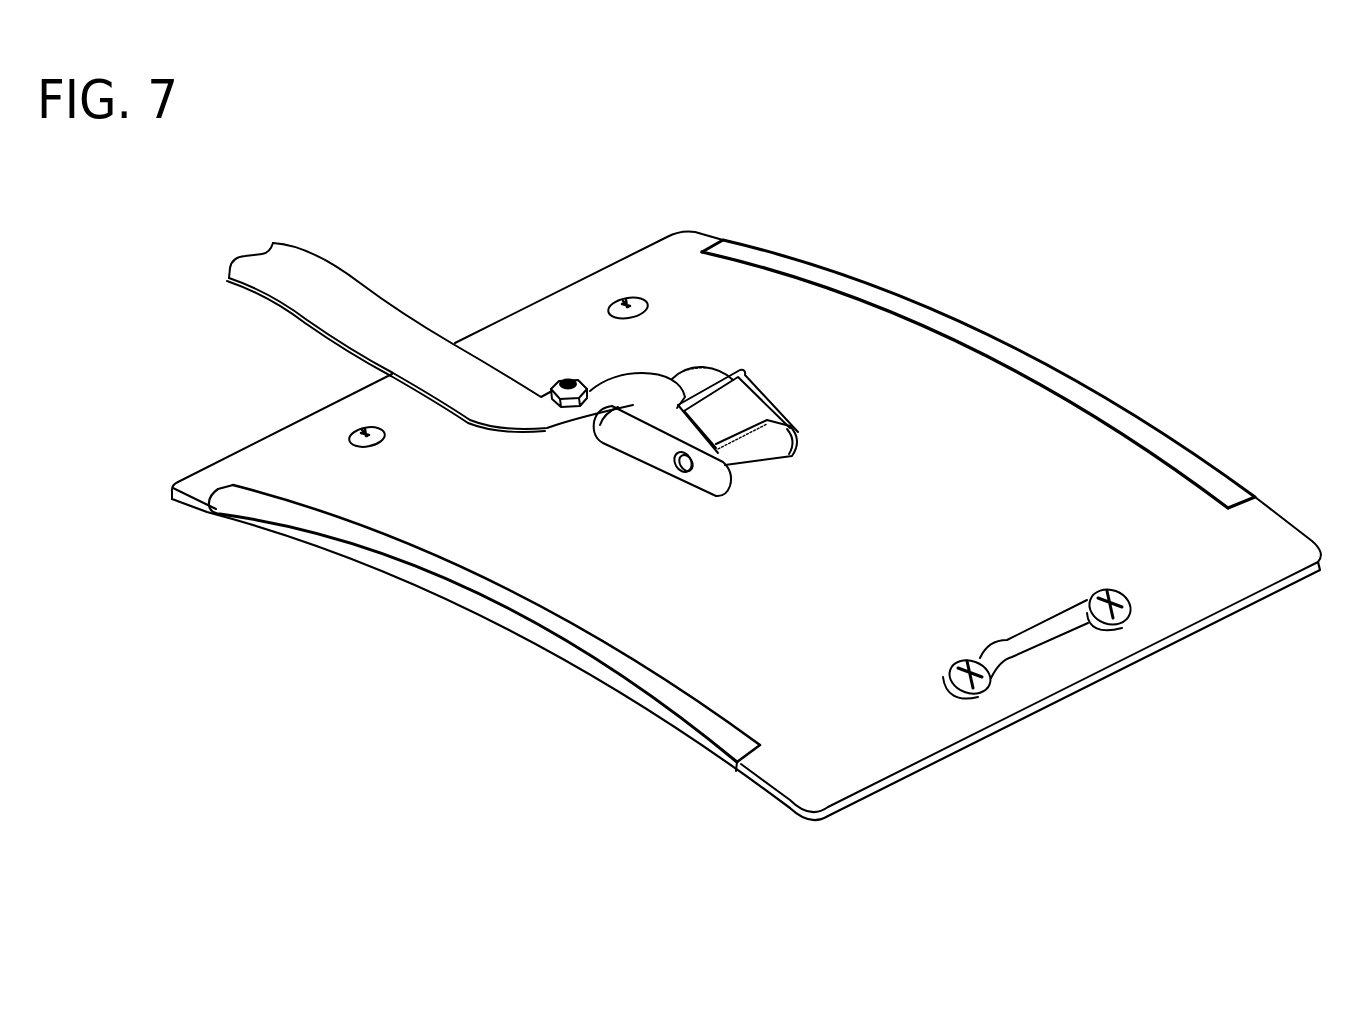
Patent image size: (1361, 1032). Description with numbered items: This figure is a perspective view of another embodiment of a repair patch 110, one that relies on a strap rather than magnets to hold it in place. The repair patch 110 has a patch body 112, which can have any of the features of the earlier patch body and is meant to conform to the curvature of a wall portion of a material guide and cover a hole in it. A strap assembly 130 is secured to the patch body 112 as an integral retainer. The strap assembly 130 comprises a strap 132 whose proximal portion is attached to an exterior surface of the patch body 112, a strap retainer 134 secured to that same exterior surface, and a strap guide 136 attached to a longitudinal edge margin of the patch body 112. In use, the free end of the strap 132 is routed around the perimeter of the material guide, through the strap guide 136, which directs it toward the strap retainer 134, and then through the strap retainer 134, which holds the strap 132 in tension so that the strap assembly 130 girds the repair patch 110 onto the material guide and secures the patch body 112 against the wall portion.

The repair patch 110 is at (350, 778).
The patch body 112 is at (1313, 495).
The strap assembly 130 is at (835, 367).
The strap 132 is at (386, 300).
The strap retainer 134 is at (653, 443).
The strap guide 136 is at (1038, 632).